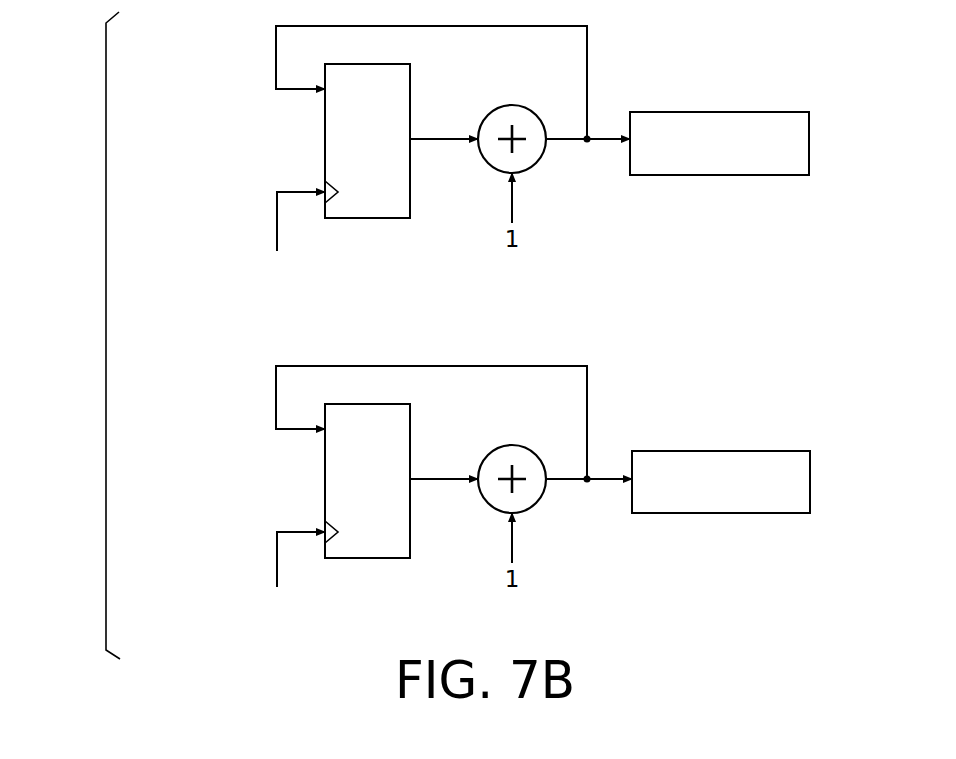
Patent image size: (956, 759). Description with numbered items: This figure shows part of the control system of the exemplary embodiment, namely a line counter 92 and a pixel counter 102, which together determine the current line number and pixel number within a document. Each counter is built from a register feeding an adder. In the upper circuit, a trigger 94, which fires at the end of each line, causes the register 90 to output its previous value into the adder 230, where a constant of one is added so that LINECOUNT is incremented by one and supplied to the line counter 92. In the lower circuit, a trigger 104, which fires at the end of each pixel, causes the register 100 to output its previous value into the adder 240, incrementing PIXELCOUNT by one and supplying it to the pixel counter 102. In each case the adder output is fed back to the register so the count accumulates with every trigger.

The register 90 is at (410, 91).
The line counter 92 is at (735, 112).
The trigger 94 is at (193, 253).
The adder 230 is at (531, 168).
The register 100 is at (410, 431).
The pixel counter 102 is at (733, 451).
The trigger 104 is at (193, 592).
The adder 240 is at (531, 508).